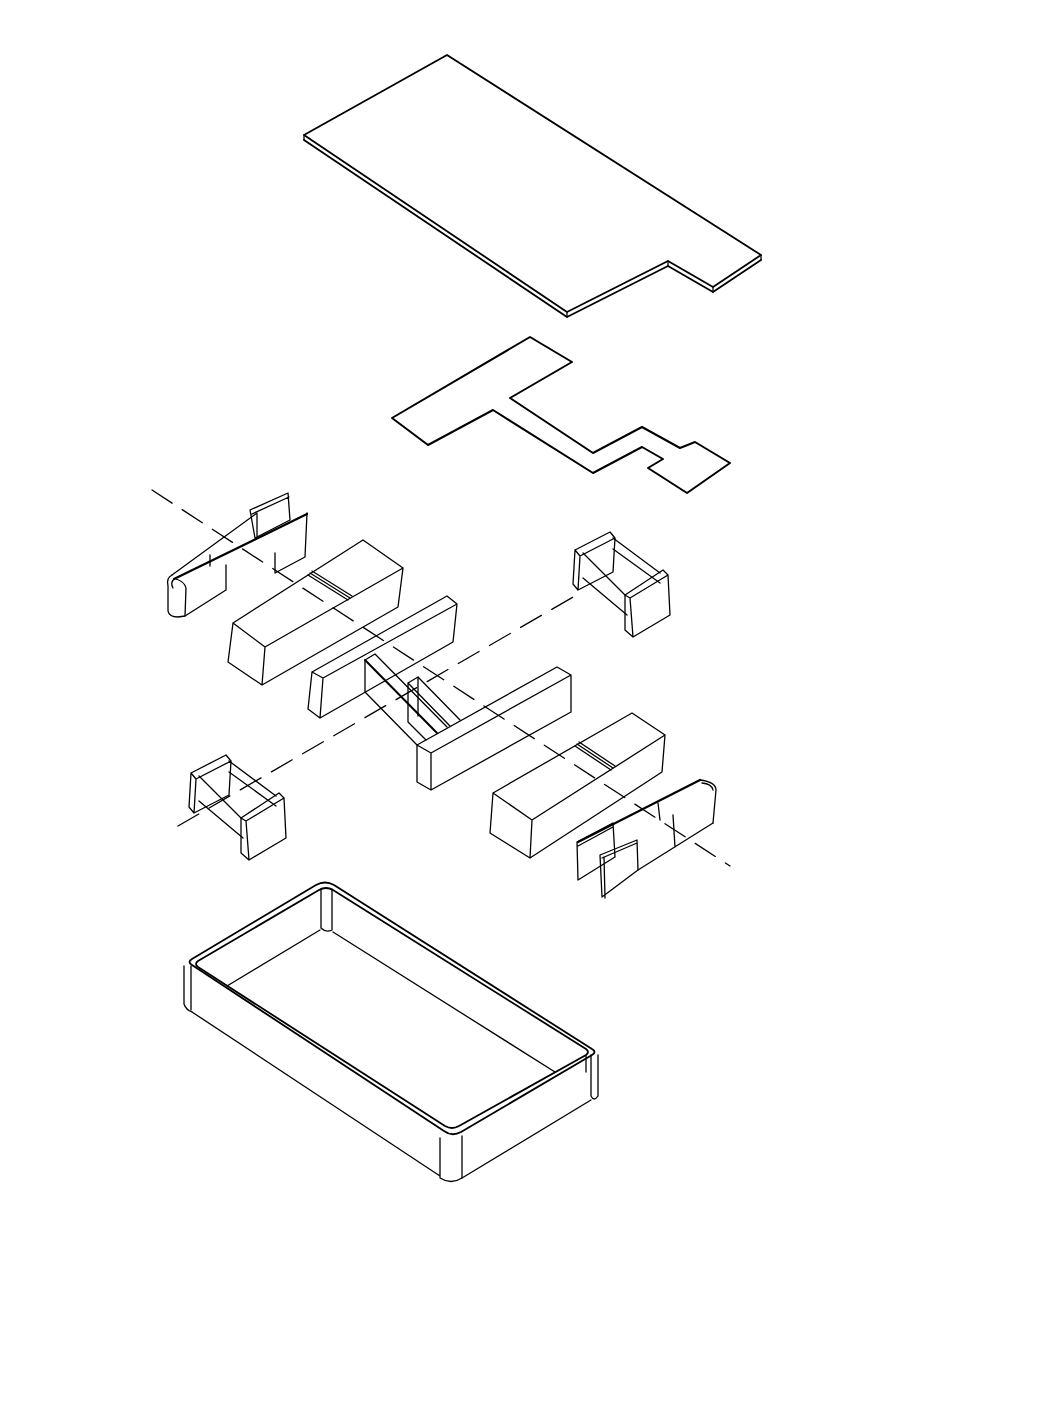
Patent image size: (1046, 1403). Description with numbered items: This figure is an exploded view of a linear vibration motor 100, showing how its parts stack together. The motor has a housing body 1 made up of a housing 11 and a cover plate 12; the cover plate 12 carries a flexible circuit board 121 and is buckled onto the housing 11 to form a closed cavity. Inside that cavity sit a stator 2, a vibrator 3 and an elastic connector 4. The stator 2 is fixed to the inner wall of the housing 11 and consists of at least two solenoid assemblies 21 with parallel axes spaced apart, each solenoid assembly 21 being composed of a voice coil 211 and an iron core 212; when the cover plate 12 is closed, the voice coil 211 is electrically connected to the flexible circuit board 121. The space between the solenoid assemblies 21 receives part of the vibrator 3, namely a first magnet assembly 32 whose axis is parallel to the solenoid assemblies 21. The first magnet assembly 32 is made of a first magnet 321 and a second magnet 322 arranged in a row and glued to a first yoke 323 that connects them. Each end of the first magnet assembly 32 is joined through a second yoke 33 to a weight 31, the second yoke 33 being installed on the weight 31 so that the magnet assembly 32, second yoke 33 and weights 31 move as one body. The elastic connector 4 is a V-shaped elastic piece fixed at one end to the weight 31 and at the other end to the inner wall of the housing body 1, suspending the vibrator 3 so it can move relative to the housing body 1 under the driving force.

The linear vibration motor 100 is at (815, 33).
The housing body 1 is at (185, 1040).
The housing 11 is at (483, 1078).
The cover plate 12 is at (745, 241).
The flexible circuit board 121 is at (712, 458).
The stator 2 is at (198, 847).
The solenoid assembly 21 is at (787, 528).
The voice coil 211 is at (637, 558).
The iron core 212 is at (657, 603).
The vibrator 3 is at (193, 708).
The weight 31 is at (373, 555).
The first magnet assembly 32 is at (503, 675).
The first magnet 321 is at (428, 762).
The second magnet 322 is at (378, 700).
The first yoke 323 is at (410, 712).
The second yoke 33 is at (448, 596).
The elastic connector 4 is at (192, 562).